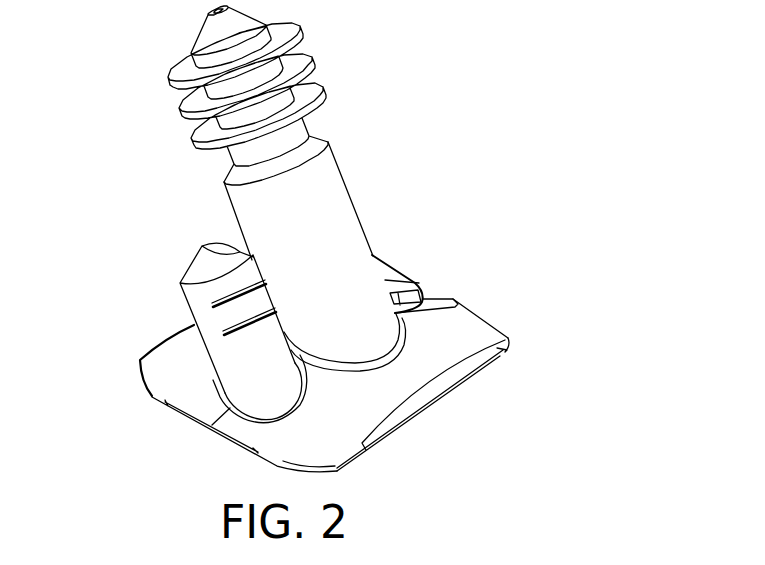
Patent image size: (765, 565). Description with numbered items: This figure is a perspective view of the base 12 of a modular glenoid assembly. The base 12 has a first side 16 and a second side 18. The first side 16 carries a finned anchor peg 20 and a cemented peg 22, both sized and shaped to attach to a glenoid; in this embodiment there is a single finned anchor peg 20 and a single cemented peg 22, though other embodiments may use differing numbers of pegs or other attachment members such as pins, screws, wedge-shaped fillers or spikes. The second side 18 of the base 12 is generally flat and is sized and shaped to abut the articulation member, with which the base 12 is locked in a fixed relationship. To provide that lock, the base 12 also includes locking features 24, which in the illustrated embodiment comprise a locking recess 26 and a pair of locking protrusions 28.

The base 12 is at (470, 163).
The first side 16 is at (463, 327).
The second side 18 is at (415, 417).
The finned anchor peg 20 is at (340, 197).
The cemented peg 22 is at (195, 298).
The locking features 24 is at (433, 285).
The locking recess 26 is at (441, 287).
The locking protrusions 28 is at (506, 353).